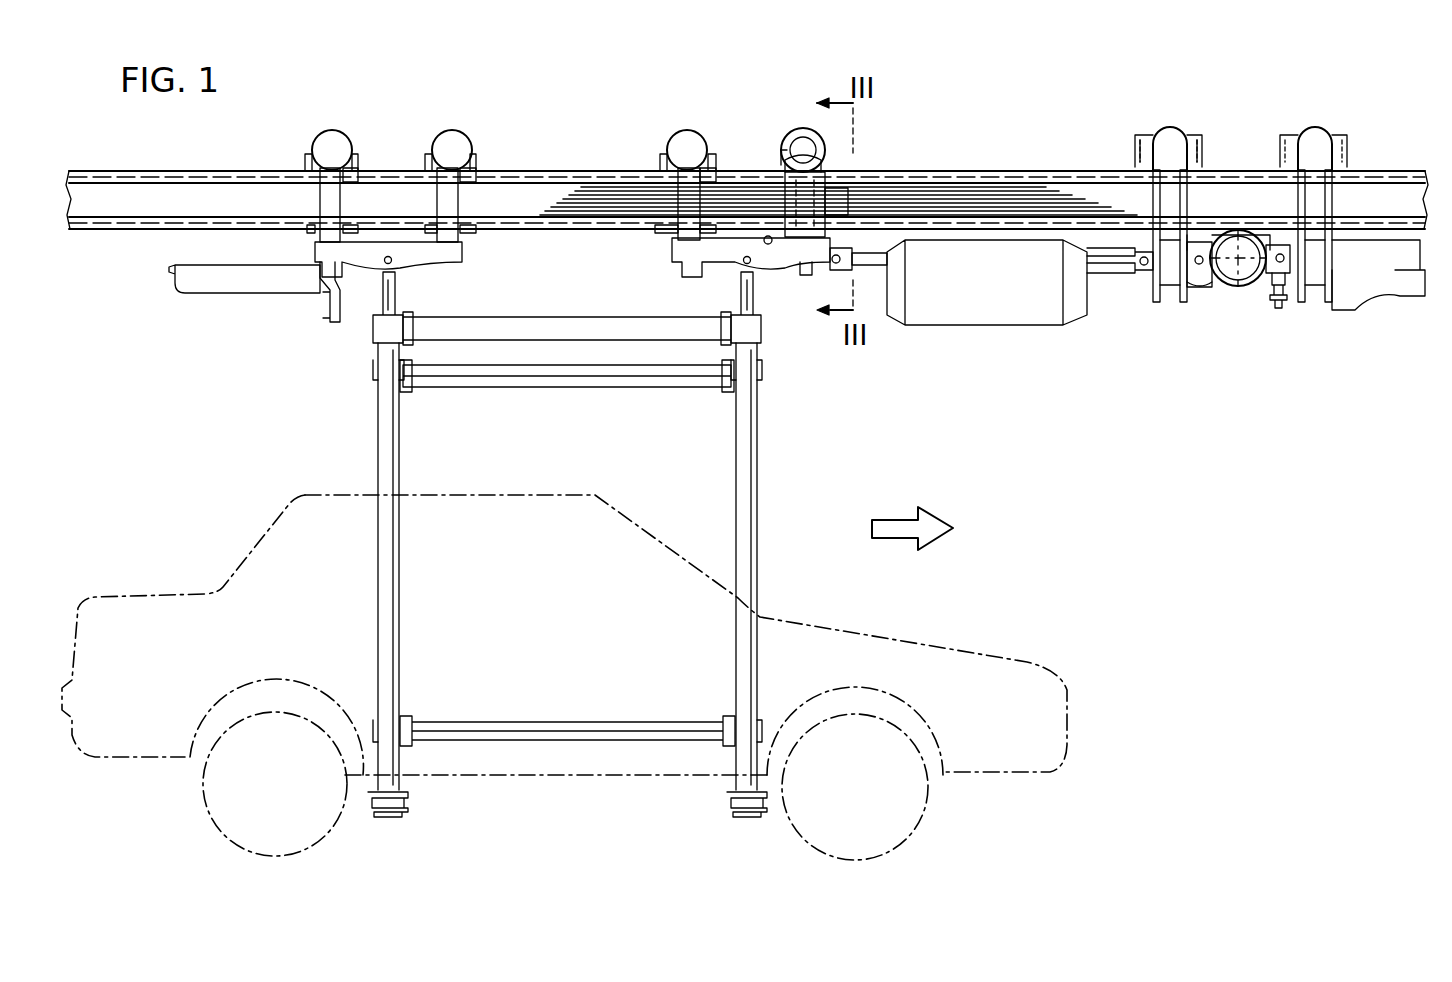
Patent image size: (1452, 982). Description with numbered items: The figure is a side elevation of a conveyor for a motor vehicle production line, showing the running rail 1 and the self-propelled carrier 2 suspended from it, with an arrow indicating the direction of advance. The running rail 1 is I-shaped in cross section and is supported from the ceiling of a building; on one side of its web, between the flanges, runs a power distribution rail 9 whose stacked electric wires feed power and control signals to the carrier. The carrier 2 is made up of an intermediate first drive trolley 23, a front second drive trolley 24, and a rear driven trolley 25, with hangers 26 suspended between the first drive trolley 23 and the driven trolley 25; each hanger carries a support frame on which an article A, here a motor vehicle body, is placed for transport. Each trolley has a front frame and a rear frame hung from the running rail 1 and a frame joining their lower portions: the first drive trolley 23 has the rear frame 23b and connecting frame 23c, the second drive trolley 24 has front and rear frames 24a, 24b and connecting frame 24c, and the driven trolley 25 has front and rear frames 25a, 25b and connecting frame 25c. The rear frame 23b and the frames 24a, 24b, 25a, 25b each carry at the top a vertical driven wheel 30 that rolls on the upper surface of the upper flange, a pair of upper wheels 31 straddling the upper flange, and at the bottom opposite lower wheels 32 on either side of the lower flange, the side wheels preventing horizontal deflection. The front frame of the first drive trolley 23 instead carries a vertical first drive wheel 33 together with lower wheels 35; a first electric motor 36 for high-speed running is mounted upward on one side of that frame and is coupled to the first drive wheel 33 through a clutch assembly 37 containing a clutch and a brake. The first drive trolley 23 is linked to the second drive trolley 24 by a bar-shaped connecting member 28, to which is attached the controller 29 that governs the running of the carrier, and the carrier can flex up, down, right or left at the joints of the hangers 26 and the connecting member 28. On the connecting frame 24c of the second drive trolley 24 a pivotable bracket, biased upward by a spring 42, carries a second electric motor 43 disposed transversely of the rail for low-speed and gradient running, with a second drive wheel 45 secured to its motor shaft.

The running rail 1 is at (180, 170).
The self-propelled carrier 2 is at (375, 440).
The power distribution rail 9 is at (988, 192).
The first drive trolley 23 is at (778, 125).
The rear frame of first drive trolley 23b is at (660, 165).
The connecting frame of first drive trolley 23c is at (727, 260).
The second drive trolley 24 is at (1286, 125).
The front frame of second drive trolley 24a is at (1348, 140).
The rear frame of second drive trolley 24b is at (1135, 145).
The connecting frame of second drive trolley 24c is at (1198, 282).
The driven trolley 25 is at (435, 140).
The front frame of driven trolley 25a is at (475, 155).
The rear frame of driven trolley 25b is at (302, 155).
The connecting frame of driven trolley 25c is at (428, 258).
The hangers 26 is at (378, 462).
The connecting member 28 is at (1105, 275).
The controller 29 is at (988, 325).
The vertical driven wheel 30 is at (333, 135).
The upper wheels 31 is at (352, 178).
The lower wheels 32 is at (290, 230).
The first drive wheel 33 is at (801, 128).
The lower wheels of front frame 35 is at (768, 244).
The first electric motor 36 is at (820, 272).
The clutch assembly 37 is at (781, 150).
The spring 42 is at (1280, 308).
The second electric motor 43 is at (1240, 287).
The second drive wheel 45 is at (1240, 232).
The article A is at (938, 643).